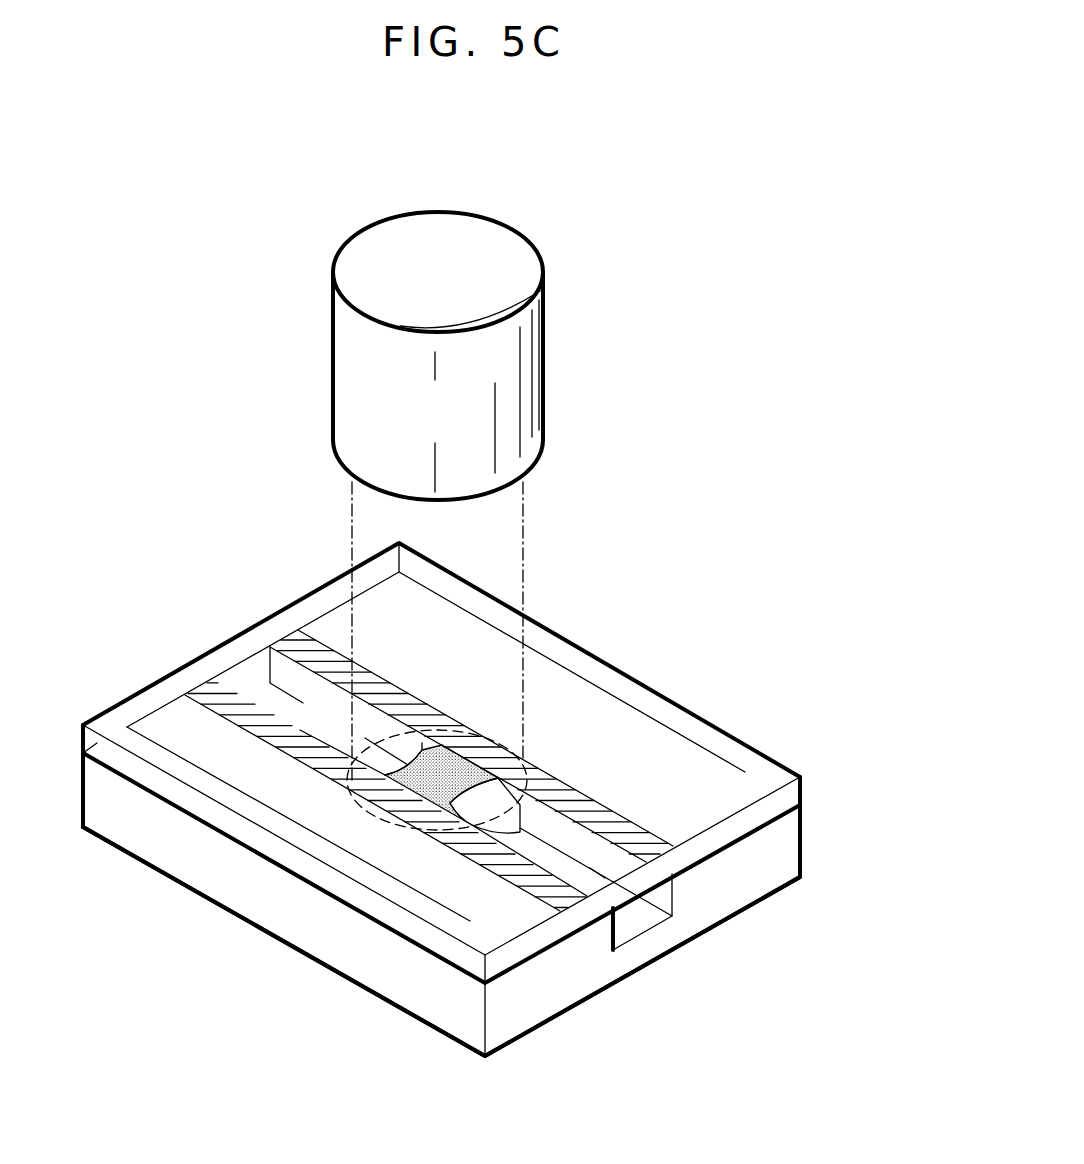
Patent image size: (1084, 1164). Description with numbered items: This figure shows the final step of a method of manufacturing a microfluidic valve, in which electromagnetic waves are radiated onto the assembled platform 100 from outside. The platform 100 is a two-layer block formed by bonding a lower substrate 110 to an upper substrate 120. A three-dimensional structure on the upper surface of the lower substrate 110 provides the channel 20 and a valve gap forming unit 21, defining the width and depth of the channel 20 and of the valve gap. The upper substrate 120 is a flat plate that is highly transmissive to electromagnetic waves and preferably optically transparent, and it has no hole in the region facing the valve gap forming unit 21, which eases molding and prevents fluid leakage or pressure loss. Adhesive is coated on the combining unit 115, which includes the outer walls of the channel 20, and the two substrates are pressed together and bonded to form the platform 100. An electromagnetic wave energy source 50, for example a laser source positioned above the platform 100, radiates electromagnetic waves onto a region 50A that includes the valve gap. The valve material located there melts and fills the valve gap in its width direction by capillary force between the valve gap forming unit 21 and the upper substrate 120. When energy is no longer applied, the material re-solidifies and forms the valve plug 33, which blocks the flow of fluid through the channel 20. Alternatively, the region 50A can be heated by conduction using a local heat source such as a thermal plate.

The channel 20 is at (637, 920).
The valve gap forming unit 21 is at (497, 800).
The valve plug 33 is at (458, 770).
The electromagnetic wave energy source 50 is at (545, 370).
The region that includes a valve gap 50A is at (390, 735).
The platform 100 is at (893, 775).
The lower substrate 110 is at (800, 848).
The combining unit 115 is at (240, 710).
The upper substrate 120 is at (803, 788).